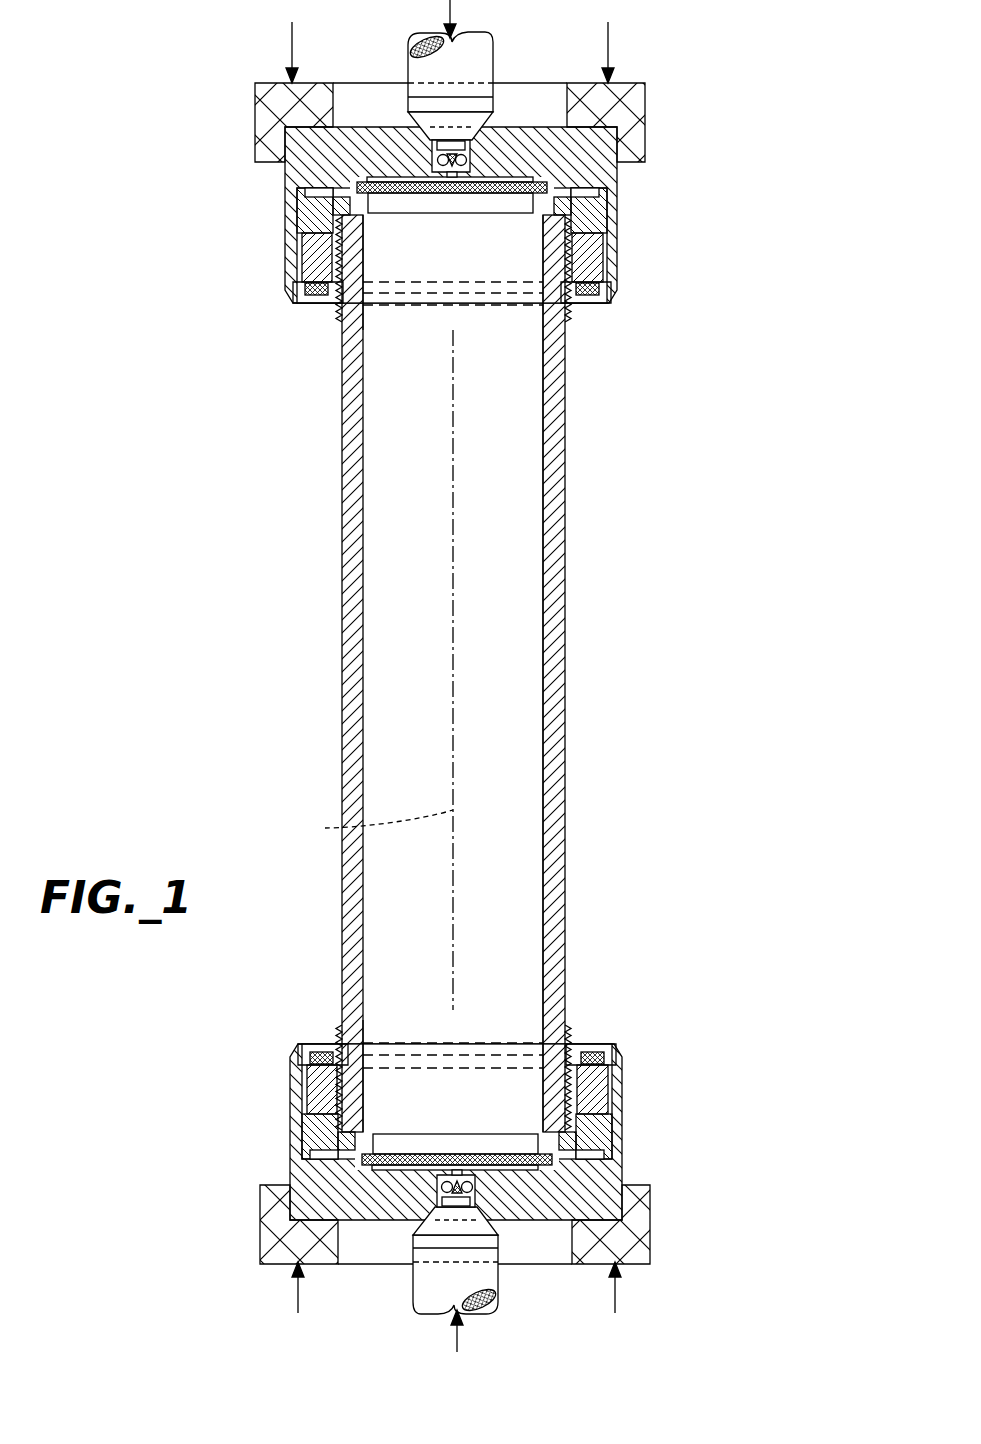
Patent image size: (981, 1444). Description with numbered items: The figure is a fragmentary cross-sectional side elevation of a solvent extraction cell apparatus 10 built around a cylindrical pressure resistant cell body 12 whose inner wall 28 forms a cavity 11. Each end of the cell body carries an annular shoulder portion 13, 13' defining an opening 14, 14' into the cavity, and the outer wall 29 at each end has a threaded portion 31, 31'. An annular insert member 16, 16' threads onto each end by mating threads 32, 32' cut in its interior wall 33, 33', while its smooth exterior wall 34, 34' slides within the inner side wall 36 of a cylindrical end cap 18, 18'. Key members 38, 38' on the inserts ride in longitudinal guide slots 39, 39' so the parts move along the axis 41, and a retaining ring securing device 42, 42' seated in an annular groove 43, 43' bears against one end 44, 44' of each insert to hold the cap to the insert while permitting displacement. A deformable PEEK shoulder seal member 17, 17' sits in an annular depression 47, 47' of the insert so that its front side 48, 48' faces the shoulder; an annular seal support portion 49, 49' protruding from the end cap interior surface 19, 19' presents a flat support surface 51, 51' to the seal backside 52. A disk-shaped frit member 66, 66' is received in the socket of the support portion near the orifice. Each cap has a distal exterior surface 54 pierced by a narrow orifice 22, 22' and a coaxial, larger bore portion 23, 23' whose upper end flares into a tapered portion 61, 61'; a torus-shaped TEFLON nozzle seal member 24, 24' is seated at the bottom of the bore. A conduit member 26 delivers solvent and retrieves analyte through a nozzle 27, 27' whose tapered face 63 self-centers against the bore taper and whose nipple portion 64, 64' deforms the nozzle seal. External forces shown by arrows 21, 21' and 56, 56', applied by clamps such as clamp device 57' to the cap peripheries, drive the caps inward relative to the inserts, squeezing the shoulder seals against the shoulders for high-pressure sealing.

The extraction cell apparatus 10 is at (628, 458).
The cavity 11 is at (469, 754).
The cell body 12 is at (574, 838).
The shoulder portion 13 is at (477, 123).
The shoulder portion 13' is at (457, 1120).
The opening 14 is at (406, 272).
The opening 14' is at (450, 1076).
The insert member 16 is at (301, 278).
The insert member 16' is at (610, 1055).
The shoulder seal member 17 is at (280, 206).
The shoulder seal member 17' is at (630, 1140).
The end cap 18 is at (631, 257).
The end cap 18' is at (410, 1099).
The interior surface 19 is at (450, 211).
The interior surface 19' is at (455, 1137).
The arrow 21 is at (449, 50).
The arrow 21' is at (455, 1293).
The orifice 22 is at (495, 71).
The orifice 22' is at (407, 1274).
The bore portion 23 is at (461, 114).
The bore portion 23' is at (443, 1230).
The nozzle seal member 24 is at (478, 45).
The nozzle seal member 24' is at (533, 1270).
The conduit member 26 is at (468, 33).
The nozzle 27 is at (455, 151).
The nozzle 27' is at (456, 1189).
The inner wall 28 is at (545, 893).
The outer wall 29 is at (567, 520).
The threaded portion 31 is at (415, 291).
The threaded portion 31' is at (495, 1044).
The mating threads 32 is at (453, 262).
The interior wall 33 is at (453, 302).
The mating threads 32' is at (453, 1043).
The interior wall 33' is at (447, 1082).
The exterior wall 34 is at (618, 255).
The exterior wall 34' is at (625, 1084).
The inner side wall 36 is at (585, 213).
The key member 38 is at (278, 253).
The key member 38' is at (282, 1089).
The guide slot 39 is at (371, 221).
The guide slot 39' is at (379, 1123).
The axis 41 is at (374, 825).
The securing device 42 is at (608, 311).
The securing device 42' is at (297, 1035).
The annular groove 43 is at (453, 308).
The annular groove 43' is at (452, 1036).
The end 44 is at (281, 296).
The end 44' is at (618, 1037).
The annular depression 47 is at (620, 187).
The annular depression 47' is at (632, 1151).
The front side 48 is at (503, 210).
The front side 48' is at (627, 1119).
The seal support portion 49 is at (270, 142).
The seal support portion 49' is at (280, 1224).
The support surface 51 is at (488, 216).
The support surface 51' is at (299, 1112).
The seal backside 52 is at (372, 165).
The distal exterior surface 54 is at (515, 160).
The arrow 56 is at (420, 19).
The arrow 56' is at (487, 1331).
The clamp device 57' is at (397, 1278).
The tapered portion 61 is at (416, 108).
The tapered portion 61' is at (490, 1239).
The tapered face 63 is at (400, 100).
The nipple portion 64 is at (399, 96).
The nipple portion 64' is at (425, 1280).
The frit member 66 is at (417, 122).
The frit member 66' is at (480, 1236).